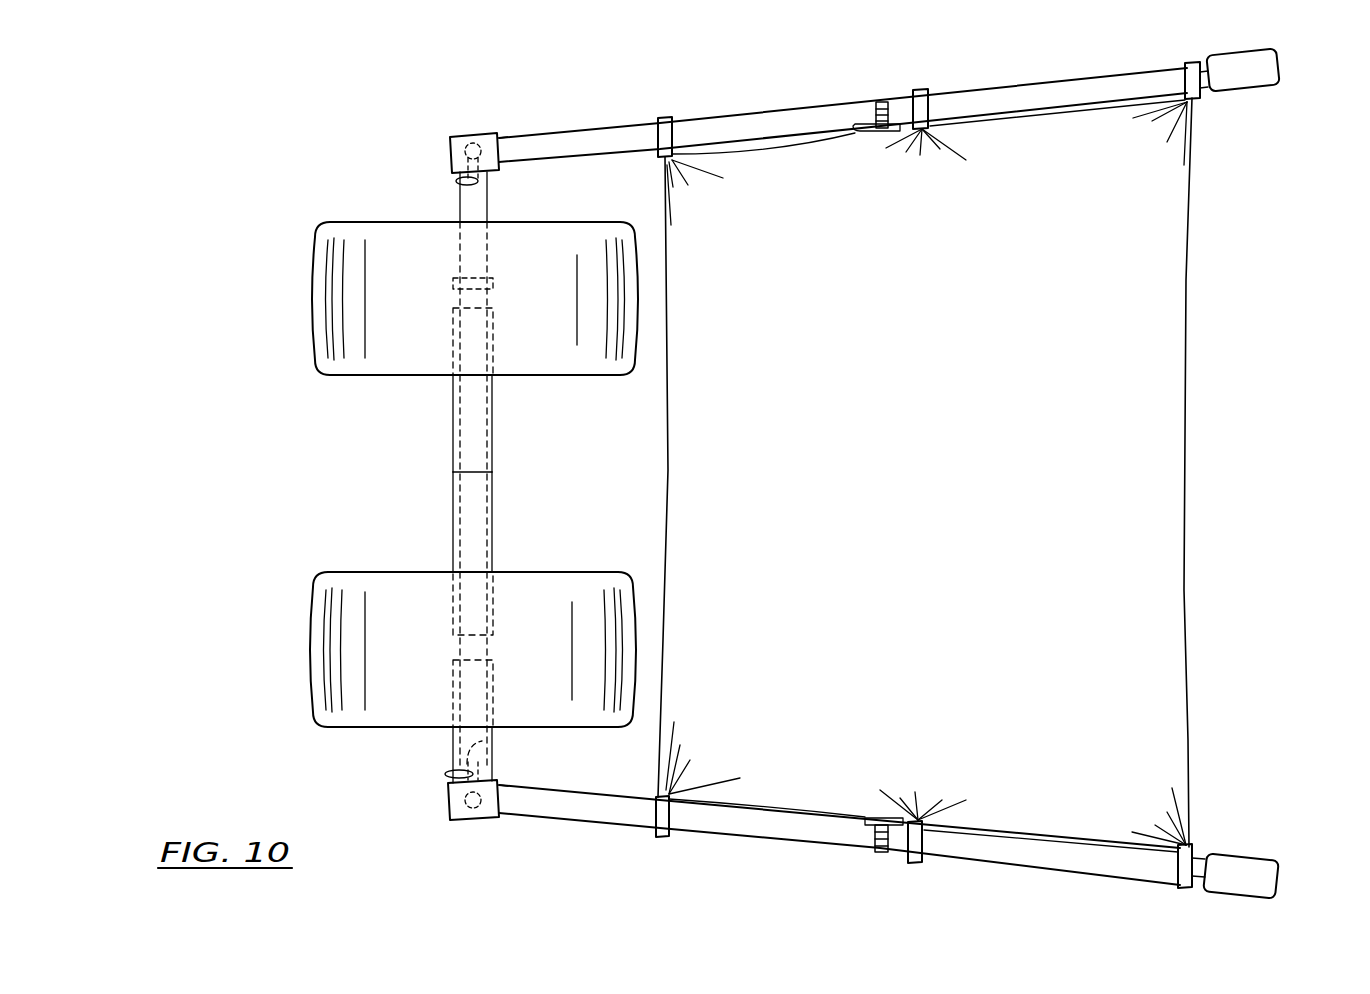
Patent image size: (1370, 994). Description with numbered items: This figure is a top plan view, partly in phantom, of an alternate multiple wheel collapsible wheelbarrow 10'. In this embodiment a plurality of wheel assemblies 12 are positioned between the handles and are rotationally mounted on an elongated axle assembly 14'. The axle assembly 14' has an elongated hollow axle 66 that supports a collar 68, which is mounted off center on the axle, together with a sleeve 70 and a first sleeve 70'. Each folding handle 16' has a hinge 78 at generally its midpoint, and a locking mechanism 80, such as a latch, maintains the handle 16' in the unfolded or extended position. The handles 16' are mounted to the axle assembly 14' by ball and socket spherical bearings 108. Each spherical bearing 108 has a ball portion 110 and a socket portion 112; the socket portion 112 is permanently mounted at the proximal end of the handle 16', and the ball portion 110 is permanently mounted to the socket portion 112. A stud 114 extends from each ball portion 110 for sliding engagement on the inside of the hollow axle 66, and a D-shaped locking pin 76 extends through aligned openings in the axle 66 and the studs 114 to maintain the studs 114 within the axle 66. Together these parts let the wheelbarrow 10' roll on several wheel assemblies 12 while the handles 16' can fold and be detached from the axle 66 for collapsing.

The multiple wheel collapsible wheelbarrow 10' is at (1301, 190).
The wheel assembly 12 is at (316, 282).
The axle assembly 14' is at (438, 423).
The folding handle 16' is at (889, 476).
The hollow axle 66 is at (490, 202).
The collar 68 is at (494, 283).
The sleeve 70 is at (438, 471).
The first sleeve 70' is at (434, 721).
The D-shaped locking pin 76 is at (456, 180).
The hinge 78 is at (886, 106).
The locking mechanism 80 is at (858, 125).
The spherical bearing 108 is at (472, 135).
The ball portion 110 is at (458, 138).
The socket portion 112 is at (500, 150).
The stud 114 is at (464, 186).